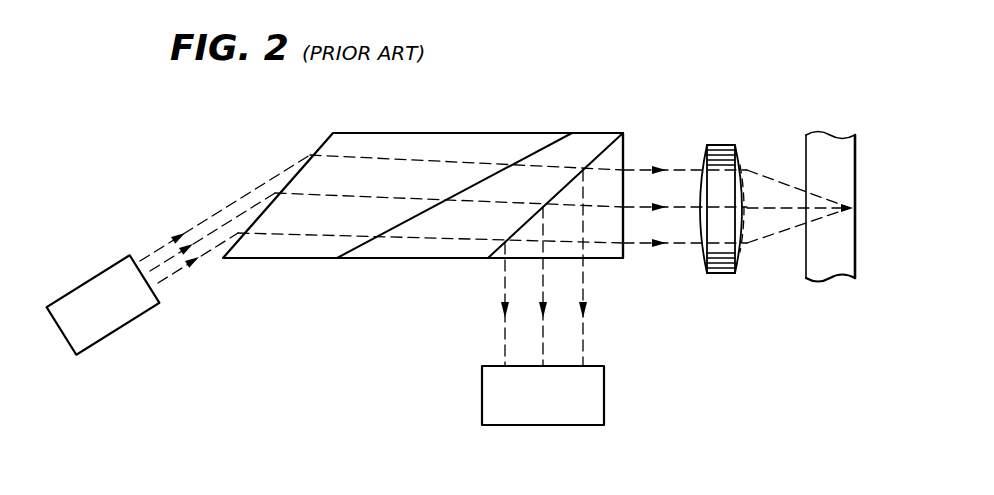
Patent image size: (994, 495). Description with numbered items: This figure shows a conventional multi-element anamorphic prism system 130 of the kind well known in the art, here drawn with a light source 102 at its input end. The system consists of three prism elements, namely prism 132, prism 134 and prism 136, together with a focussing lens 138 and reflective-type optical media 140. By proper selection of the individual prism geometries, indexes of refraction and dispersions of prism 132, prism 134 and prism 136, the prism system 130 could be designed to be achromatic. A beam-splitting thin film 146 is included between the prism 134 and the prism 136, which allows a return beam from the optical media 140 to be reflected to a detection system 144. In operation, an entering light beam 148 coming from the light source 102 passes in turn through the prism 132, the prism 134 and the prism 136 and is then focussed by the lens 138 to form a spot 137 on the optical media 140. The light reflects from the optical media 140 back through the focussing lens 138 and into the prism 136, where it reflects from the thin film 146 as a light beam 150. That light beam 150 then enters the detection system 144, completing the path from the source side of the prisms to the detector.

The multi-element prism system 130 is at (824, 34).
The light source 102 is at (62, 335).
The entering light beam 148 is at (207, 222).
The prism 132 is at (360, 140).
The prism 134 is at (427, 233).
The beam-splitting thin film 146 is at (568, 182).
The prism 136 is at (608, 252).
The focussing lens 138 is at (725, 145).
The reflective-type optical media 140 is at (833, 138).
The spot 137 is at (855, 210).
The light beam 150 is at (505, 345).
The detection system 144 is at (595, 366).